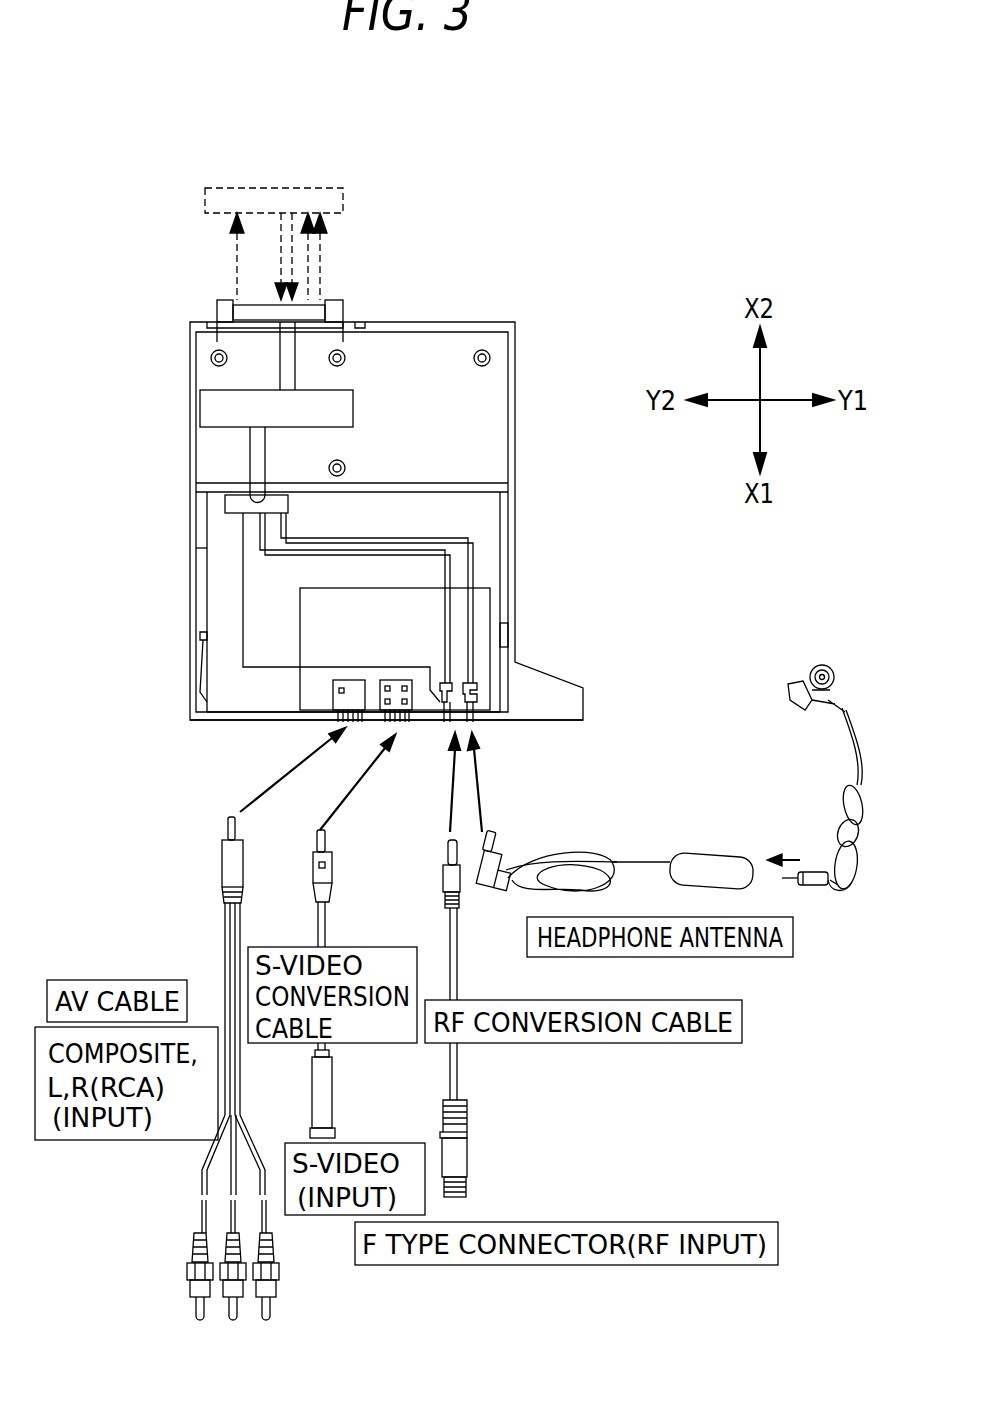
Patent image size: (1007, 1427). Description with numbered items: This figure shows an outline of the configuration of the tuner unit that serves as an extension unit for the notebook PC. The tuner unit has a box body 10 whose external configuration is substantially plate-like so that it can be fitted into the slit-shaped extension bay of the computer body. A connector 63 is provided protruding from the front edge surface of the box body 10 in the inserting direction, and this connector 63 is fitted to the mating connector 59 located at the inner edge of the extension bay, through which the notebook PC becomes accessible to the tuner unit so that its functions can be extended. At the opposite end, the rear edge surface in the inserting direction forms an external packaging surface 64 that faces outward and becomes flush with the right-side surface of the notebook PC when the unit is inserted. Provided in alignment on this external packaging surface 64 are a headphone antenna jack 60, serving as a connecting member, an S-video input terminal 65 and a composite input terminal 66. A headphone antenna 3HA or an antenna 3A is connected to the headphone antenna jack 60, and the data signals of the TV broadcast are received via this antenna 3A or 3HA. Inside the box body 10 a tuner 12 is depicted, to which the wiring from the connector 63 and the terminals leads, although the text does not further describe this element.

The connector 59 is at (205, 200).
The connector 63 is at (215, 316).
The box body 10 is at (190, 413).
The tuner 12 is at (470, 628).
The external packaging surface 64 is at (200, 722).
The composite input terminal 66 is at (335, 700).
The S-video input terminal 65 is at (380, 702).
The headphone antenna jack 60 is at (478, 702).
The headphone antenna 3HA is at (505, 852).
The antenna 3A is at (455, 878).